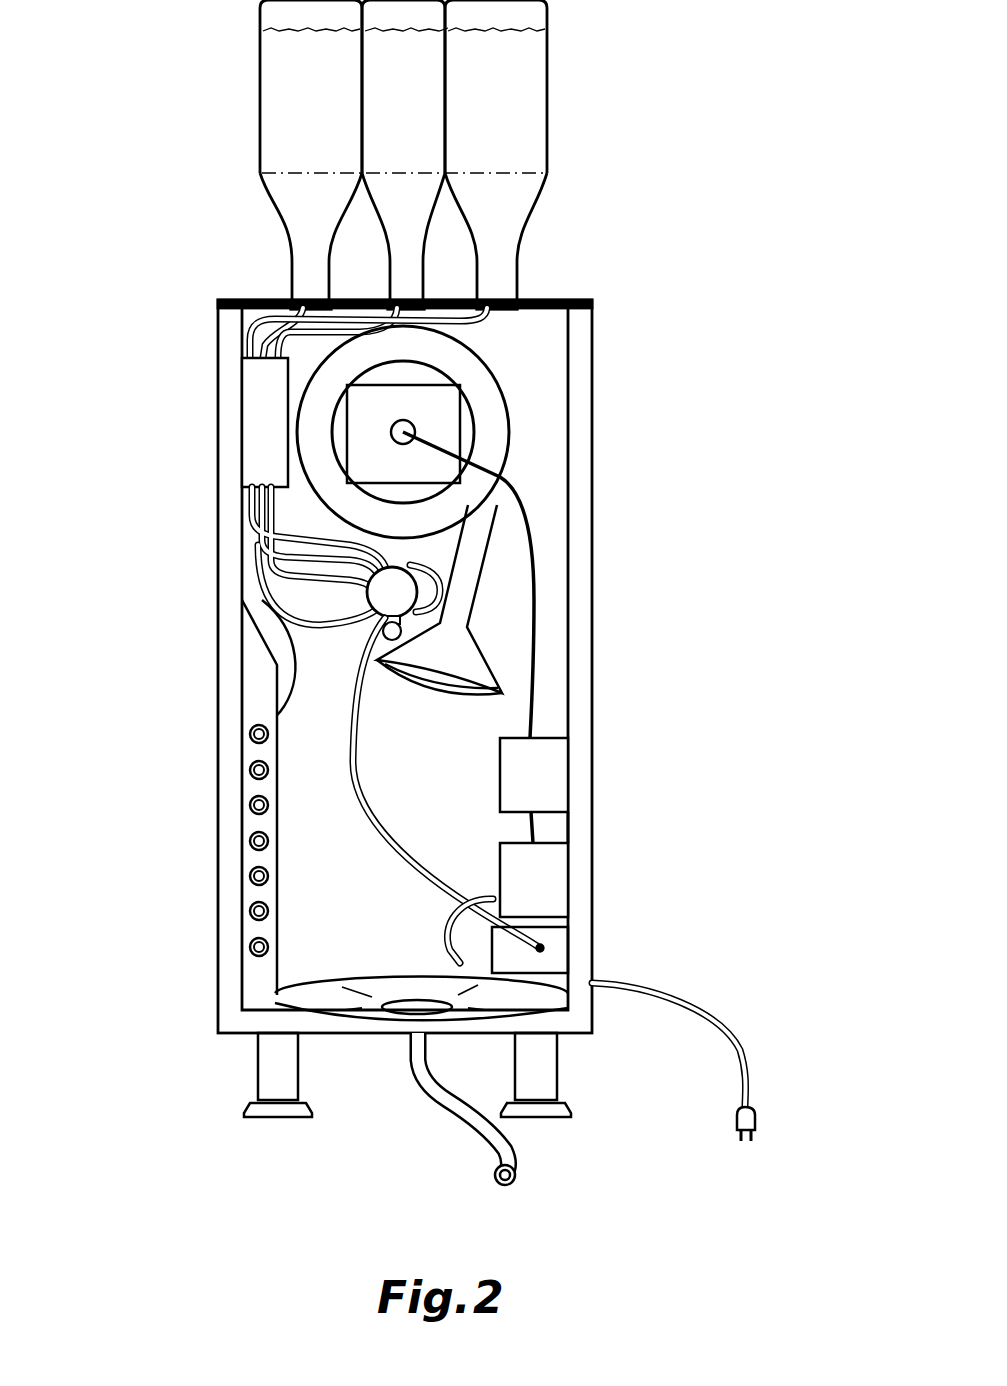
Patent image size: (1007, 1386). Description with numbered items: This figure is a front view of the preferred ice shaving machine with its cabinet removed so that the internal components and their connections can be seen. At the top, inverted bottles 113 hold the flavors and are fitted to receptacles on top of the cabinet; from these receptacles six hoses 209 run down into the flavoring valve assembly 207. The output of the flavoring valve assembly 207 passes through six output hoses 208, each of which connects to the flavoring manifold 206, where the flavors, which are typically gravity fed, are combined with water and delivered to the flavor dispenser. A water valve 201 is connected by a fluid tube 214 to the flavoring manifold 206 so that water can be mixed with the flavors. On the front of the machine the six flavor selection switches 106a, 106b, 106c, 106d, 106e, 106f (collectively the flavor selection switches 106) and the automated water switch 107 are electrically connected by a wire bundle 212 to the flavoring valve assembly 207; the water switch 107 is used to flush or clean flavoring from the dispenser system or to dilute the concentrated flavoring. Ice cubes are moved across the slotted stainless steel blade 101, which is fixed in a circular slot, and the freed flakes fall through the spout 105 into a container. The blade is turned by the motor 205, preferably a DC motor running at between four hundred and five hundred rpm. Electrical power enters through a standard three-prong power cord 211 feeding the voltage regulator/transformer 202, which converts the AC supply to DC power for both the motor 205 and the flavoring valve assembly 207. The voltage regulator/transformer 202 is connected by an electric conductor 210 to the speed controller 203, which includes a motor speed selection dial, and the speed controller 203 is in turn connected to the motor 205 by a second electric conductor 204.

The inverted bottles 113 is at (535, 158).
The hoses 209 is at (268, 332).
The flavoring valve assembly 207 is at (255, 435).
The motor 205 is at (432, 390).
The blade 101 is at (478, 422).
The flavor selection switches 106 is at (477, 467).
The second electric conductor 204 is at (540, 658).
The spout 105 is at (467, 655).
The output hoses 208 is at (300, 552).
The flavoring manifold 206 is at (377, 595).
The wire bundle 212 is at (290, 640).
The fluid tube 214 is at (343, 713).
The flavor selection switch 106a is at (250, 736).
The flavor selection switch 106b is at (250, 772).
The flavor selection switch 106c is at (250, 807).
The flavor selection switch 106d is at (250, 843).
The flavor selection switch 106e is at (250, 878).
The flavor selection switch 106f is at (250, 913).
The automated water switch 107 is at (250, 949).
The speed controller 203 is at (542, 772).
The electric conductor 210 is at (568, 828).
The voltage regulator/transformer 202 is at (550, 880).
The water valve 201 is at (548, 953).
The power cord 211 is at (735, 1037).